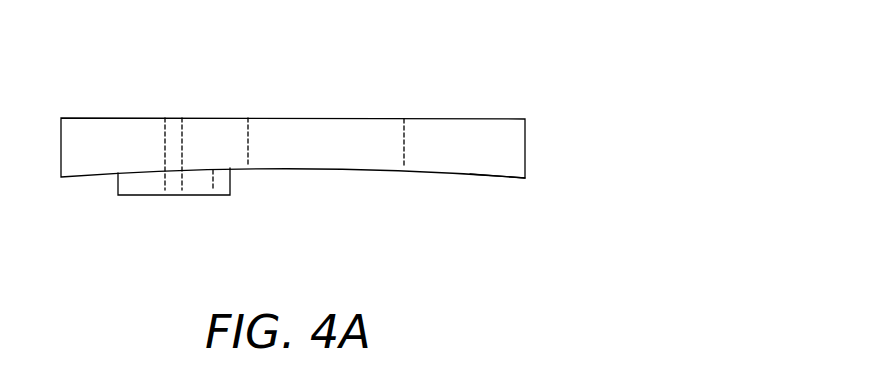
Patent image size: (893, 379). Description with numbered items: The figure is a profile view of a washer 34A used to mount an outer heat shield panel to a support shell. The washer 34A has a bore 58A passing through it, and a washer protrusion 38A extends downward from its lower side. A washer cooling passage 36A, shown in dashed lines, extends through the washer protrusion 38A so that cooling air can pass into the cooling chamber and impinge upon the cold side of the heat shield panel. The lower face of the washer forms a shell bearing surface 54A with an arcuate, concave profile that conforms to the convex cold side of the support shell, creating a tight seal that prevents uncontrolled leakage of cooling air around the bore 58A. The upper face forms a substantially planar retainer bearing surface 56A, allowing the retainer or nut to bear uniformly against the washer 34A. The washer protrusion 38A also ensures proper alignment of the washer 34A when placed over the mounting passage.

The washer 34A is at (452, 80).
The washer cooling passage 36A is at (183, 133).
The washer protrusion 38A is at (200, 196).
The shell bearing surface 54A is at (481, 176).
The retainer bearing surface 56A is at (130, 117).
The bore 58A is at (404, 152).